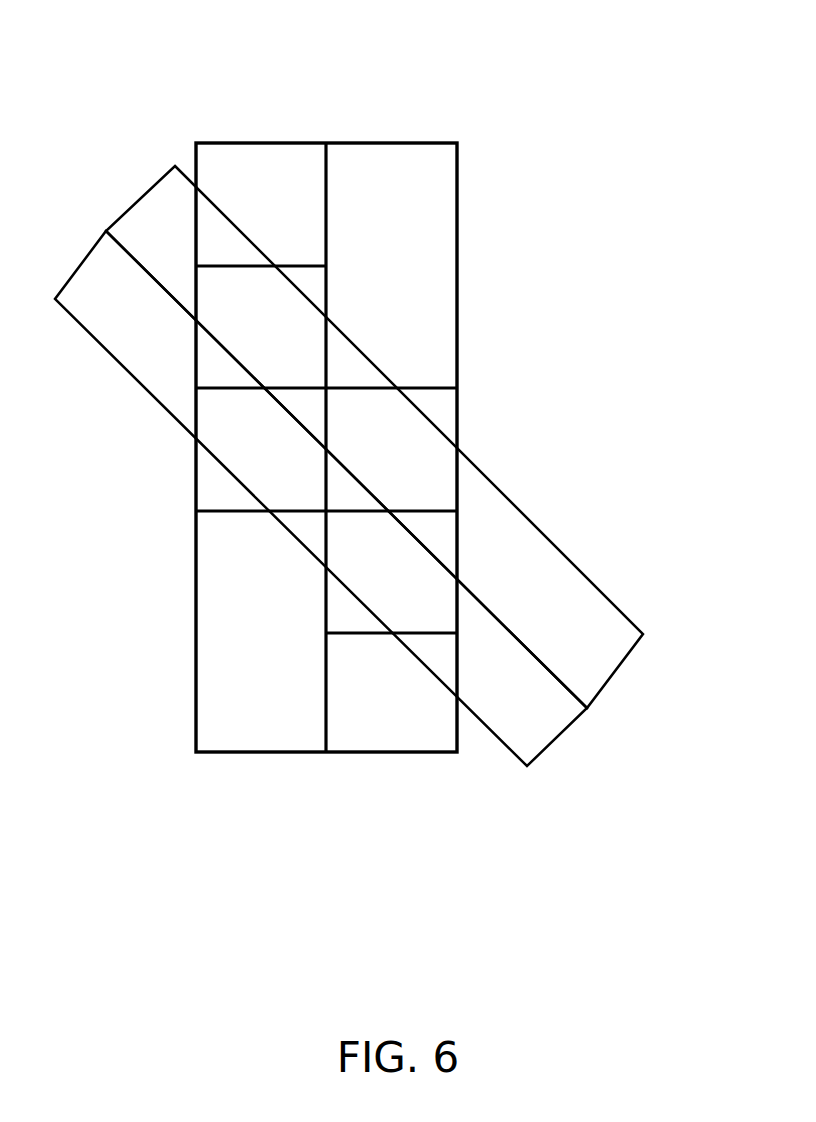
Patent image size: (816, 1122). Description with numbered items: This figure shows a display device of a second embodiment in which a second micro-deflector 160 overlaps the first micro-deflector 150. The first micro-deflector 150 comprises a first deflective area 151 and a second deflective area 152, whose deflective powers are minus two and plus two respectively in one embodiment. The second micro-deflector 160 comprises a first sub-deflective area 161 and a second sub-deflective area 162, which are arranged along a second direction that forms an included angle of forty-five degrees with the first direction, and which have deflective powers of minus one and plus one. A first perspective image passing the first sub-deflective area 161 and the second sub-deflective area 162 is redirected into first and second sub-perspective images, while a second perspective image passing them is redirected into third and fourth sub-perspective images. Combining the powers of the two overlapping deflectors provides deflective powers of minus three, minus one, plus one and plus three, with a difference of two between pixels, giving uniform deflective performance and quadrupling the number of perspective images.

The first micro-deflector 150 is at (345, 379).
The first deflective area 151 is at (409, 349).
The second deflective area 152 is at (295, 155).
The second micro-deflector 160 is at (389, 504).
The first sub-deflective area 161 is at (606, 652).
The second sub-deflective area 162 is at (330, 525).